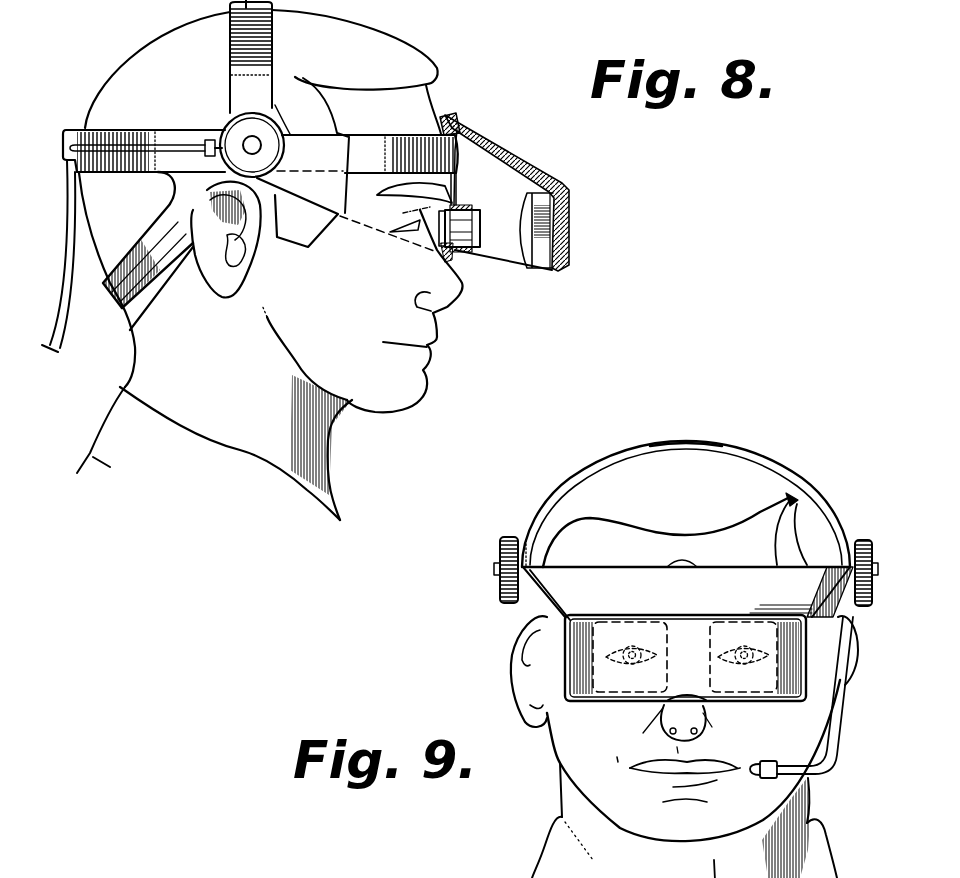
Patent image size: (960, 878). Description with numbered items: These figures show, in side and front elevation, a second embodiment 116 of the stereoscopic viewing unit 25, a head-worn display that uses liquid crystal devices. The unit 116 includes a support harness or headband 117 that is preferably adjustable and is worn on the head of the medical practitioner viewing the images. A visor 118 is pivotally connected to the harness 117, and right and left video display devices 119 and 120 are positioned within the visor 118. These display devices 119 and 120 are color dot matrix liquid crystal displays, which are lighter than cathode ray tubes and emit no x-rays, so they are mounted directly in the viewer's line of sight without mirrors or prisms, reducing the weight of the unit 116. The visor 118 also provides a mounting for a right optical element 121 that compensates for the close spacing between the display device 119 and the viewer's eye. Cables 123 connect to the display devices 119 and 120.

In FIG. 8, the stereoscopic viewing unit 25 is at (512, 145).
In FIG. 9, the stereoscopic viewing unit 25 is at (536, 606).
In FIG. 8, the second embodiment of the stereoscopic viewing unit 116 is at (461, 114).
In FIG. 9, the second embodiment of the stereoscopic viewing unit 116 is at (584, 470).
In FIG. 9, the support harness or headband 117 is at (661, 444).
In FIG. 8, the visor 118 is at (563, 186).
In FIG. 9, the visor 118 is at (768, 577).
In FIG. 8, the right video display device 119 is at (568, 247).
In FIG. 9, the right video display device 119 is at (752, 622).
In FIG. 9, the left video display device 120 is at (652, 623).
In FIG. 8, the right optical element 121 is at (460, 253).
In FIG. 8, the cables 123 is at (66, 222).